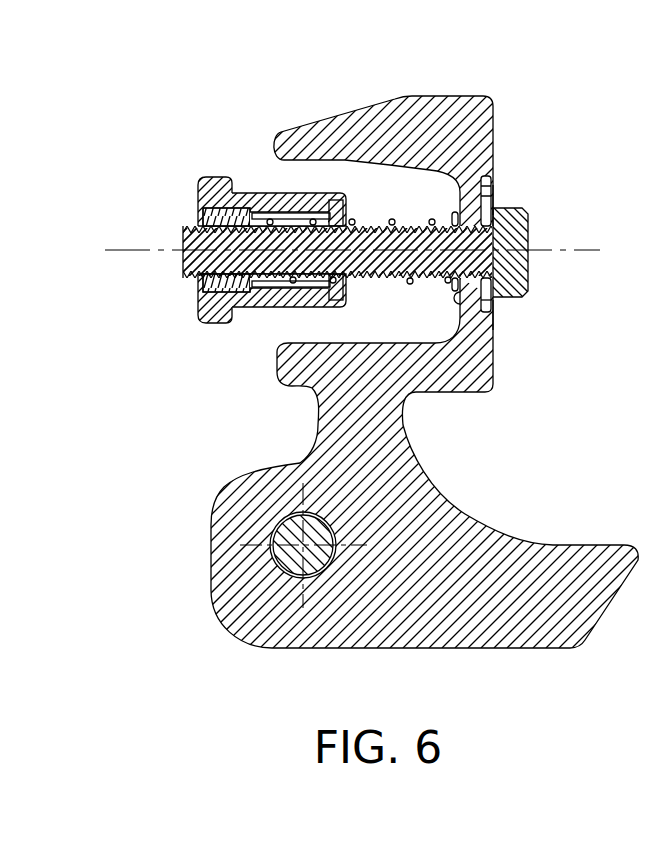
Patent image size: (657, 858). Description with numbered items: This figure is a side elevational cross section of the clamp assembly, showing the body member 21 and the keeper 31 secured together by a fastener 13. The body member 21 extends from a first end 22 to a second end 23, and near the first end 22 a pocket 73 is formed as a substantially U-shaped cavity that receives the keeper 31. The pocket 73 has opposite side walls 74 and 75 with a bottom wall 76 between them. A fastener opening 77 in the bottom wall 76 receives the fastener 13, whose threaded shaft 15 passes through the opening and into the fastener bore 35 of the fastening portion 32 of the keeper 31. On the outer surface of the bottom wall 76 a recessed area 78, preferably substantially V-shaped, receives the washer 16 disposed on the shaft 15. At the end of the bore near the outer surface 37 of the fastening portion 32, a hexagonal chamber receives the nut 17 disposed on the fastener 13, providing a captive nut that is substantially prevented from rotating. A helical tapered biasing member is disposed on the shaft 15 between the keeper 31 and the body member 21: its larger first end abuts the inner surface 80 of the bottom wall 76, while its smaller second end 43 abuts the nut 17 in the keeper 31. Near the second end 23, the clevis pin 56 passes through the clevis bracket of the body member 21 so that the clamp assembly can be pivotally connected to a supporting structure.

The fastener 13 is at (545, 230).
The threaded shaft 15 is at (183, 276).
The washer 16 is at (494, 200).
The nut 17 is at (206, 214).
The body member 21 is at (328, 361).
The first end 22 is at (437, 96).
The second end 23 is at (474, 649).
The keeper 31 is at (247, 305).
The fastening portion 32 is at (256, 190).
The fastener bore 35 is at (284, 197).
The outer surface 37 is at (200, 313).
The second end 43 is at (275, 287).
The clevis pin 56 is at (277, 564).
The pocket 73 is at (275, 192).
The side wall 74 is at (246, 358).
The side wall 75 is at (374, 165).
The bottom wall 76 is at (455, 300).
The fastener opening 77 is at (491, 323).
The recessed area 78 is at (492, 183).
The inner surface 80 is at (493, 328).